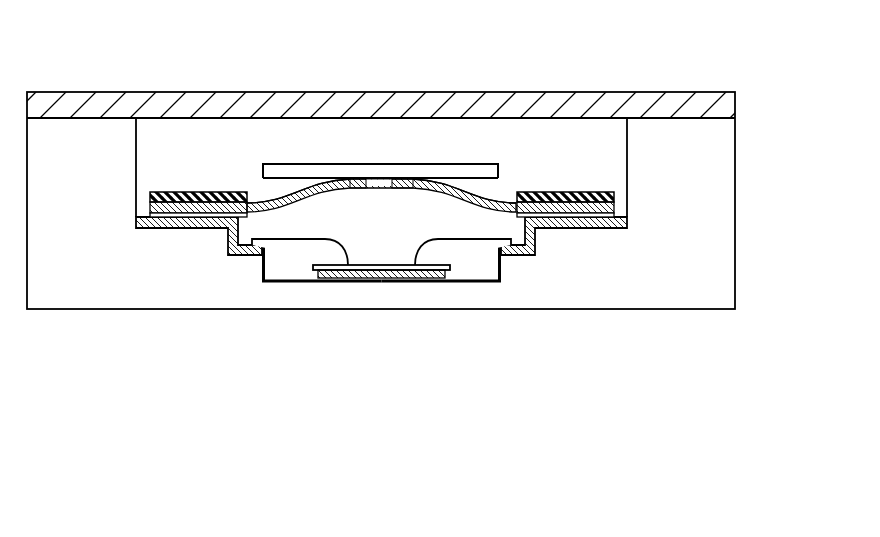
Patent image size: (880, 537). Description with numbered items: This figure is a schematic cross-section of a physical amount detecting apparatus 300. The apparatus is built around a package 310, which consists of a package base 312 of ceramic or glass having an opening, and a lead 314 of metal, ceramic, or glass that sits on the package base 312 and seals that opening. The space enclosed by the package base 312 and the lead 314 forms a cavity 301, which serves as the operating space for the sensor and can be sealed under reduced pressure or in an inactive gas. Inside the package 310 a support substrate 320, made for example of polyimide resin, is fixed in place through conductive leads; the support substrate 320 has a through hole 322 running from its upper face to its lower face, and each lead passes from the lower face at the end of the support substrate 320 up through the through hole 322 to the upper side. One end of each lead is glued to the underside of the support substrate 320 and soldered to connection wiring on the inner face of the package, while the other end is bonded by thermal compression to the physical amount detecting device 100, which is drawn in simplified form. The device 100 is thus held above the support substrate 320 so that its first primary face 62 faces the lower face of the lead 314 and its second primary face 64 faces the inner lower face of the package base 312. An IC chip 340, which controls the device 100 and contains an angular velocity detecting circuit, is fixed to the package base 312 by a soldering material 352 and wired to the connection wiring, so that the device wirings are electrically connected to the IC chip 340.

The physical amount detecting apparatus 300 is at (731, 53).
The package 310 is at (429, 198).
The package base 312 is at (718, 162).
The lead 314 is at (718, 103).
The cavity 301 is at (223, 145).
The support substrate 320 is at (381, 238).
The through hole 322 is at (372, 191).
The physical amount detecting device 100 is at (404, 156).
The first primary face 62 is at (462, 160).
The second primary face 64 is at (488, 182).
The IC chip 340 is at (350, 265).
The soldering material 352 is at (396, 272).